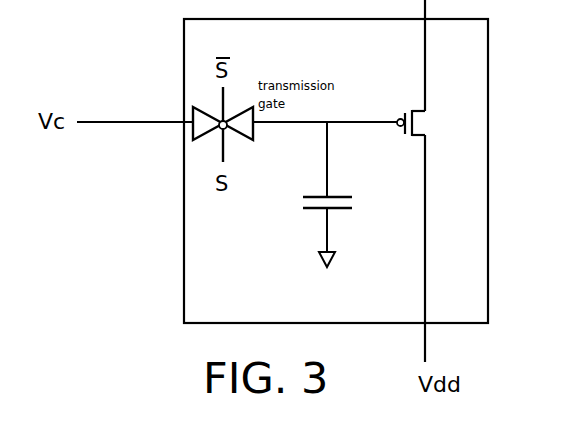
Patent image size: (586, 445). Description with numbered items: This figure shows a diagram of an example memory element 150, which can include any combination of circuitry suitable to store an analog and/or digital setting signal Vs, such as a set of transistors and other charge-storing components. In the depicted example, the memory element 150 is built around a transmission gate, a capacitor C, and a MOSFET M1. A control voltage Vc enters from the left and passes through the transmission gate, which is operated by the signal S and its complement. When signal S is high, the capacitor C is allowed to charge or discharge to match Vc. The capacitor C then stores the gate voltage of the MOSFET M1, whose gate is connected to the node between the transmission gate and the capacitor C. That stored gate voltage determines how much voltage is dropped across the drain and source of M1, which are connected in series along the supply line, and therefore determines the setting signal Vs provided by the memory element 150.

The memory element 150 is at (477, 47).
The MOSFET M1 is at (428, 181).
The capacitor C is at (329, 194).